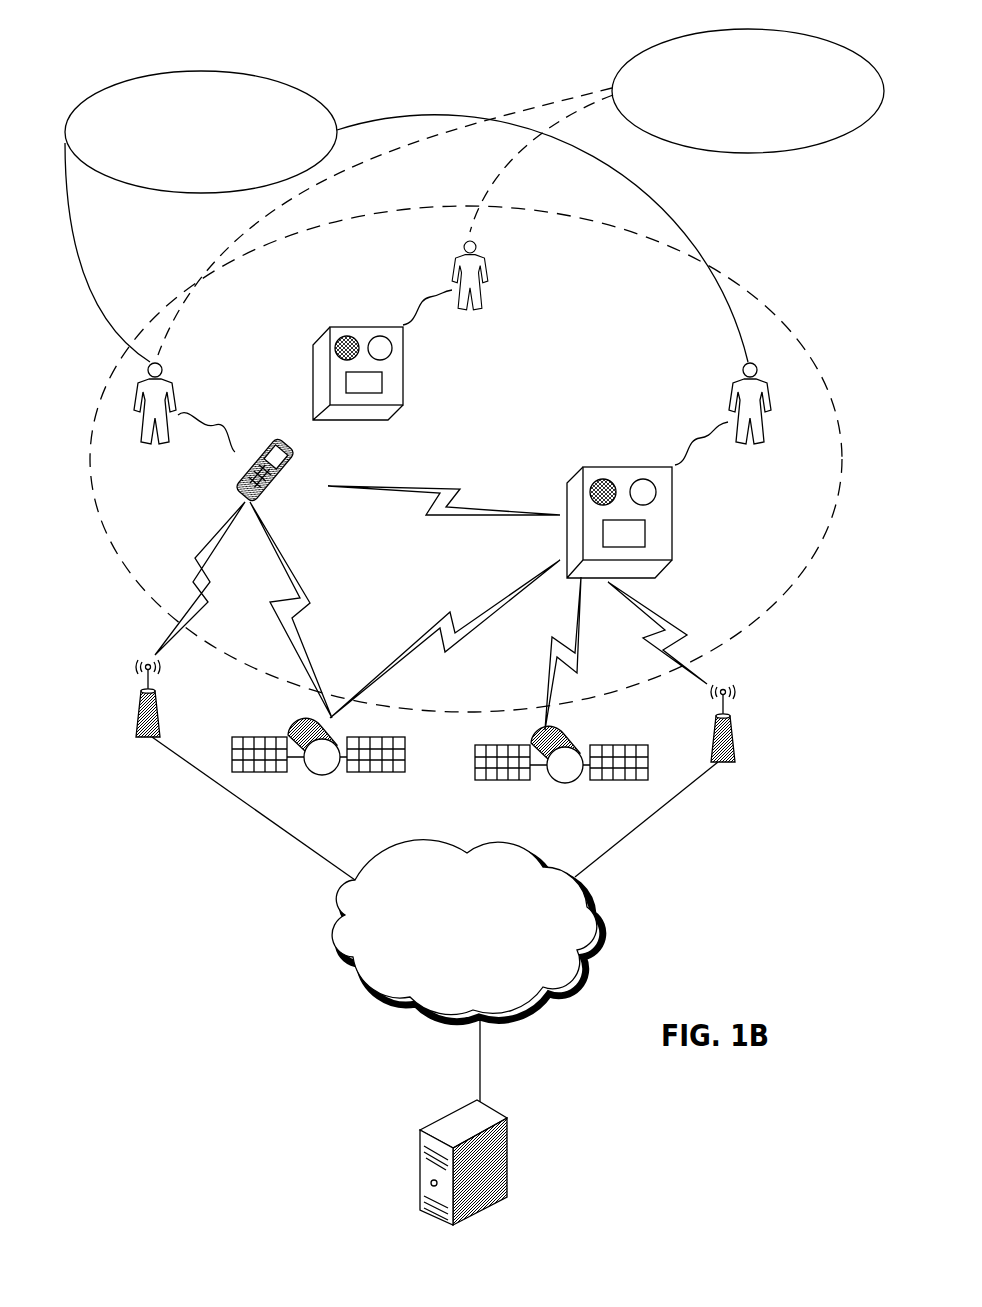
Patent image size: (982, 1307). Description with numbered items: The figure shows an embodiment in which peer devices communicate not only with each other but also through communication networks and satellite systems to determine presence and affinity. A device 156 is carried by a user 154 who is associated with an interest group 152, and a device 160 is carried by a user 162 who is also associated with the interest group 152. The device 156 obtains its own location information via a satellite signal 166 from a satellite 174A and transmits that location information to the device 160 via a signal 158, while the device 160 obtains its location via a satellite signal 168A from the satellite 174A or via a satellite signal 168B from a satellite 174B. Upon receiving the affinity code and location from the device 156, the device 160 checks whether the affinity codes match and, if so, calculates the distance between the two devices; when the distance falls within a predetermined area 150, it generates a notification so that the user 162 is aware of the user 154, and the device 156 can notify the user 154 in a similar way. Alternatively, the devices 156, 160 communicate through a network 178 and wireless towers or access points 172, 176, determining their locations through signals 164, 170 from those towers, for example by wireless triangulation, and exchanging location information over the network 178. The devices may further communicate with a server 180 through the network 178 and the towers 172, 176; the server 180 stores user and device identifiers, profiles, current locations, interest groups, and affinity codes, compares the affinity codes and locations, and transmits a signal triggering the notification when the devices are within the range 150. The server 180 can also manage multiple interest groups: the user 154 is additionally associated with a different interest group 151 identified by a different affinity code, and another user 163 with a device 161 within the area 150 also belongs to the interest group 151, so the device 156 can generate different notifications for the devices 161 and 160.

The predetermined area 150 is at (745, 291).
The interest group 151 is at (826, 31).
The interest group 152 is at (316, 98).
The user 154 is at (137, 375).
The peer device 156 is at (275, 497).
The signal 158 is at (444, 487).
The peer device 160 is at (608, 467).
The device 161 is at (349, 327).
The user 162 is at (772, 388).
The user 163 is at (486, 256).
The signal 164 is at (177, 621).
The satellite signal 166 is at (305, 600).
The satellite signal 168A is at (385, 675).
The satellite signal 168B is at (553, 688).
The signal 170 is at (687, 638).
The wireless tower or access point 172 is at (163, 697).
The satellite 174A is at (377, 737).
The satellite 174B is at (620, 745).
The wireless tower or access point 176 is at (733, 727).
The network 178 is at (597, 920).
The server 180 is at (507, 1118).